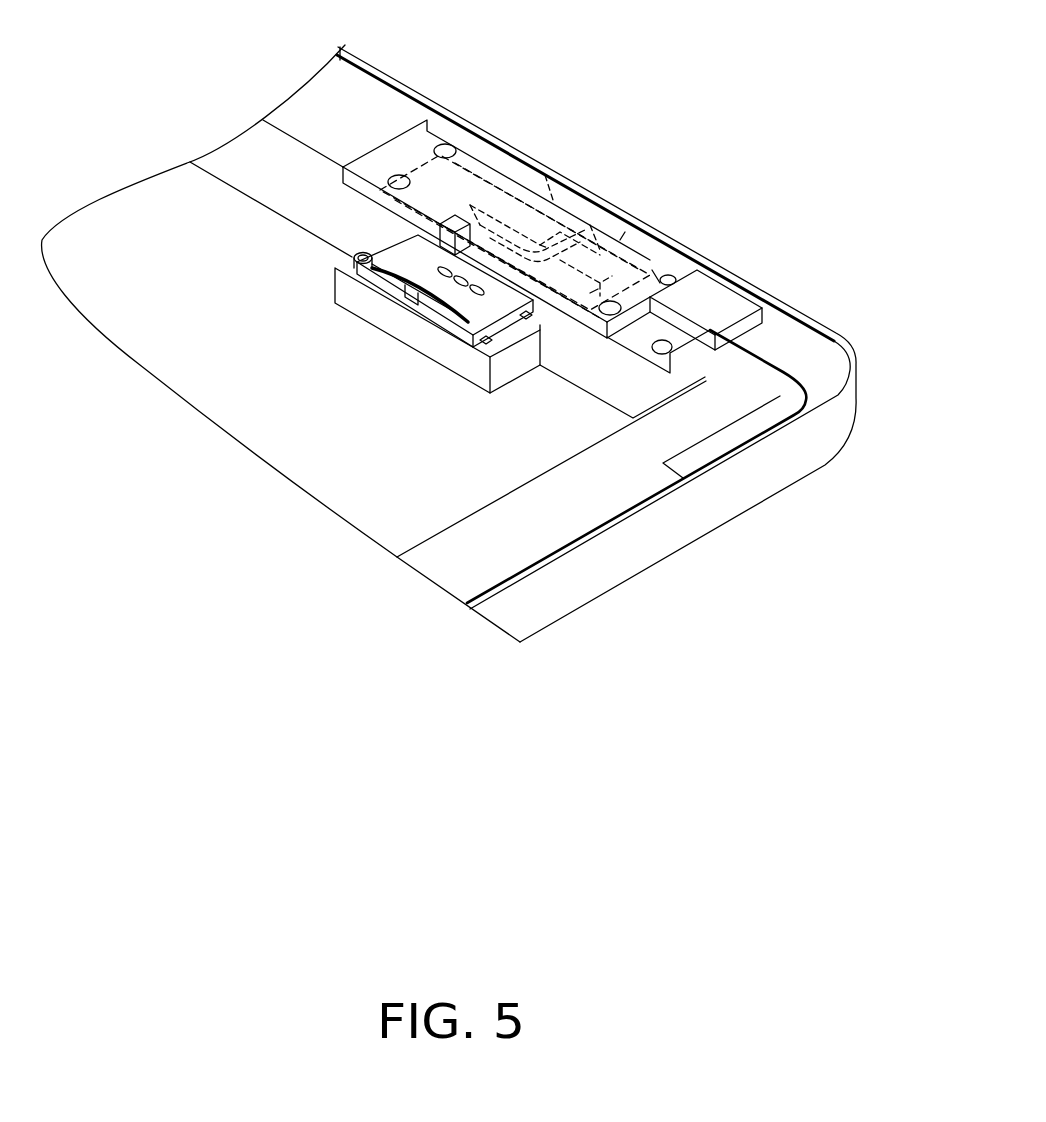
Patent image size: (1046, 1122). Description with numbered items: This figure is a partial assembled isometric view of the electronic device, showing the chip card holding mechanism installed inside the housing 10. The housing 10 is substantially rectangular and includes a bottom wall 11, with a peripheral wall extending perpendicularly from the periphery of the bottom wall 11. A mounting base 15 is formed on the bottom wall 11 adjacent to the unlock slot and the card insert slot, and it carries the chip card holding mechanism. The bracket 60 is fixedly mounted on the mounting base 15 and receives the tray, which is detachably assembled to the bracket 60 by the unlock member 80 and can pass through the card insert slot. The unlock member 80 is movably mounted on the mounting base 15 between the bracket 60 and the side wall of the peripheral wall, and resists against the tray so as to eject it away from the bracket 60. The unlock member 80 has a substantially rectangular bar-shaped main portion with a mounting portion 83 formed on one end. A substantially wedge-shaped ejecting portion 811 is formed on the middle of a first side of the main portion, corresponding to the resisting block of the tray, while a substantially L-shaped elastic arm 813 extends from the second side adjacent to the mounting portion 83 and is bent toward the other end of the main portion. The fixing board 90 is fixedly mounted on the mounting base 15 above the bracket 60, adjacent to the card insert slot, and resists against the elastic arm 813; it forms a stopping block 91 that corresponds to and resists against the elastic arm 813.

The housing 10 is at (660, 543).
The bottom wall 11 is at (162, 340).
The mounting base 15 is at (485, 343).
The bracket 60 is at (385, 314).
The unlock member 80 is at (455, 190).
The ejecting portion 811 is at (522, 215).
The elastic arm 813 is at (540, 235).
The mounting portion 83 is at (590, 293).
The fixing board 90 is at (632, 285).
The stopping block 91 is at (337, 303).